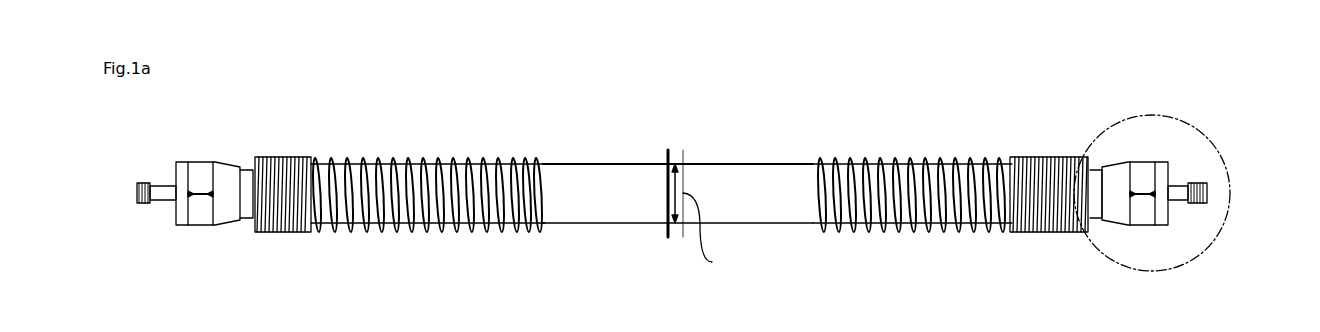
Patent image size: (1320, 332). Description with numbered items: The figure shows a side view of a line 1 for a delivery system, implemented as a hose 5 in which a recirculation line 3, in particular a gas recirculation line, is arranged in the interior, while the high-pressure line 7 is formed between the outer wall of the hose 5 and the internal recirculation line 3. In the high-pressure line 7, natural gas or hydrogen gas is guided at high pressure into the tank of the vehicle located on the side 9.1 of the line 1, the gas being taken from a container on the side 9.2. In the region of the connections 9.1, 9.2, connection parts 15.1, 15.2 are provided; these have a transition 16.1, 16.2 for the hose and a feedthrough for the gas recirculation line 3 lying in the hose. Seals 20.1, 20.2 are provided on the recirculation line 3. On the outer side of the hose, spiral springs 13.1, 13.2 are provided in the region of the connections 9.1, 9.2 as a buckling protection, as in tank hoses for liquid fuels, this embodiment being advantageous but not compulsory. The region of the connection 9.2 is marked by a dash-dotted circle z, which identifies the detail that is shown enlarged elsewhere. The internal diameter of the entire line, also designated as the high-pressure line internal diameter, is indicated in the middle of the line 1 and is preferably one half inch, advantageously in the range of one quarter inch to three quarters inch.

The line 1 is at (720, 150).
The recirculation line 3 is at (1186, 160).
The hose 5 is at (753, 183).
The high-pressure line 7 is at (1170, 212).
The side 9.1 is at (154, 166).
The side 9.2 is at (1240, 166).
The spiral spring 13.1 is at (405, 160).
The spiral spring 13.2 is at (815, 160).
The connection part 15.1 is at (228, 208).
The connection part 15.2 is at (1118, 210).
The transition 16.1 is at (325, 158).
The transition 16.2 is at (995, 160).
The seal 20.1 is at (151, 206).
The seal 20.2 is at (1195, 205).
The detail region z is at (1152, 179).